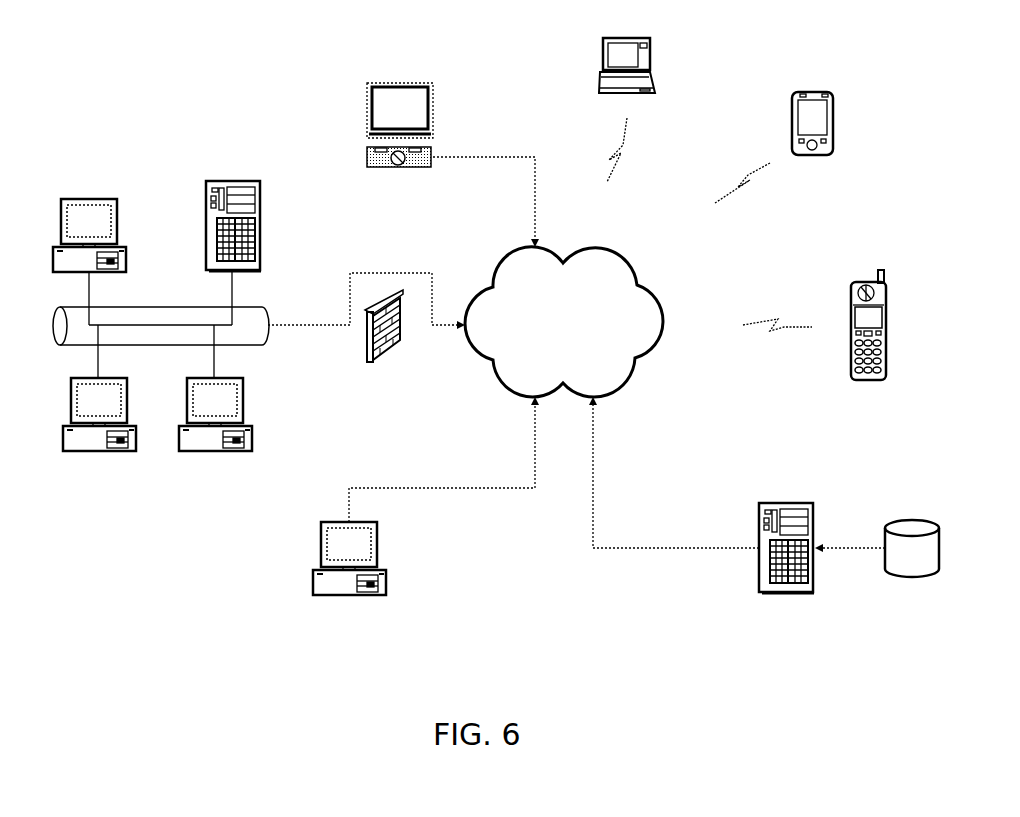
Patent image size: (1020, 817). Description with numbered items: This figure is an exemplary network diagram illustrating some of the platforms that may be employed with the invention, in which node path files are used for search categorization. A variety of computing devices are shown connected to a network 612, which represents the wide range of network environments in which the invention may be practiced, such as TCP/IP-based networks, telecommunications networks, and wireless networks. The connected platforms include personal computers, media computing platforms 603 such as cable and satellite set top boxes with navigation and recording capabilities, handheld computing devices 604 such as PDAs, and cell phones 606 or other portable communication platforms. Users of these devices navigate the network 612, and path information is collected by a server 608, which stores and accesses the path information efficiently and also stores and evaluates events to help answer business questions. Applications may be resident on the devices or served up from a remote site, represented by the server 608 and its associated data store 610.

The media computing platform 603 is at (378, 125).
The handheld computing device 604 is at (790, 113).
The cell phone 606 is at (846, 325).
The server 608 is at (779, 524).
The data store 610 is at (904, 524).
The network 612 is at (551, 316).